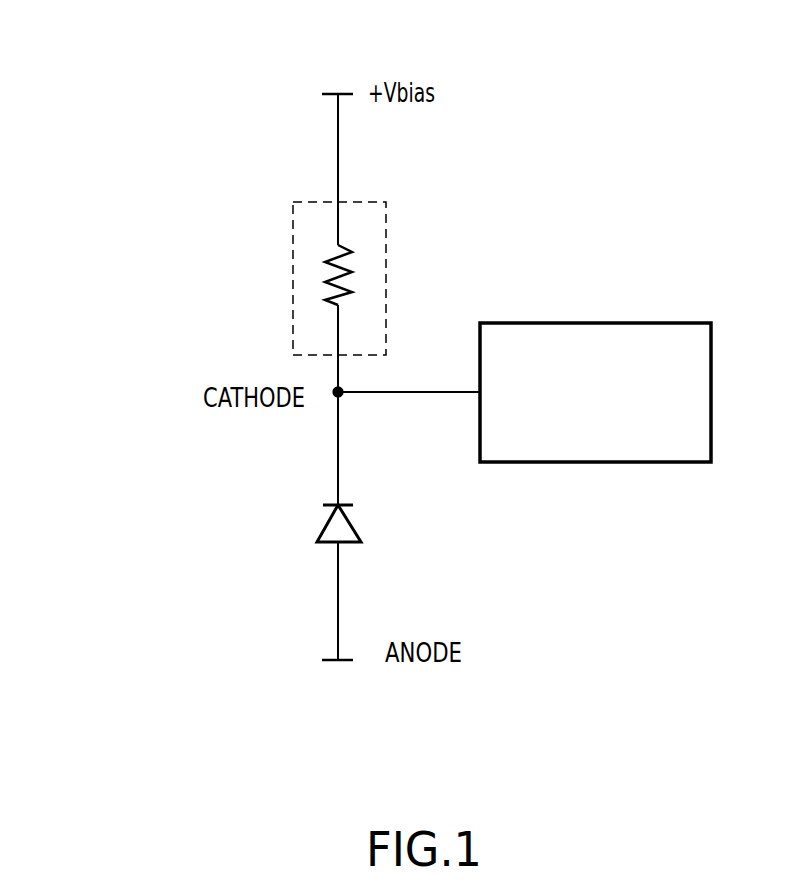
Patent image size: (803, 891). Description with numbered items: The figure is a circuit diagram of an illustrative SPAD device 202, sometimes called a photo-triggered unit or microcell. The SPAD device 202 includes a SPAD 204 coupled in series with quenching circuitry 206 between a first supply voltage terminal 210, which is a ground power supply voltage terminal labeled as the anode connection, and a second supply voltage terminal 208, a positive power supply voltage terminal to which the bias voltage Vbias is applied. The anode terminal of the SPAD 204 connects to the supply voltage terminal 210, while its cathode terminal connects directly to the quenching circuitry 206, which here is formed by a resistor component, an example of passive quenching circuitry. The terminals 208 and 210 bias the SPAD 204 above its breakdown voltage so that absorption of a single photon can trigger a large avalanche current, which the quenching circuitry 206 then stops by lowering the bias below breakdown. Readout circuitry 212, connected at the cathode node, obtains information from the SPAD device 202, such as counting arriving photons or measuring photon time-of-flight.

The SPAD device 202 is at (175, 174).
The SPAD 204 is at (294, 527).
The quenching circuitry 206 is at (296, 277).
The second supply voltage terminal 208 is at (346, 92).
The first supply voltage terminal 210 is at (330, 662).
The readout circuitry 212 is at (628, 322).